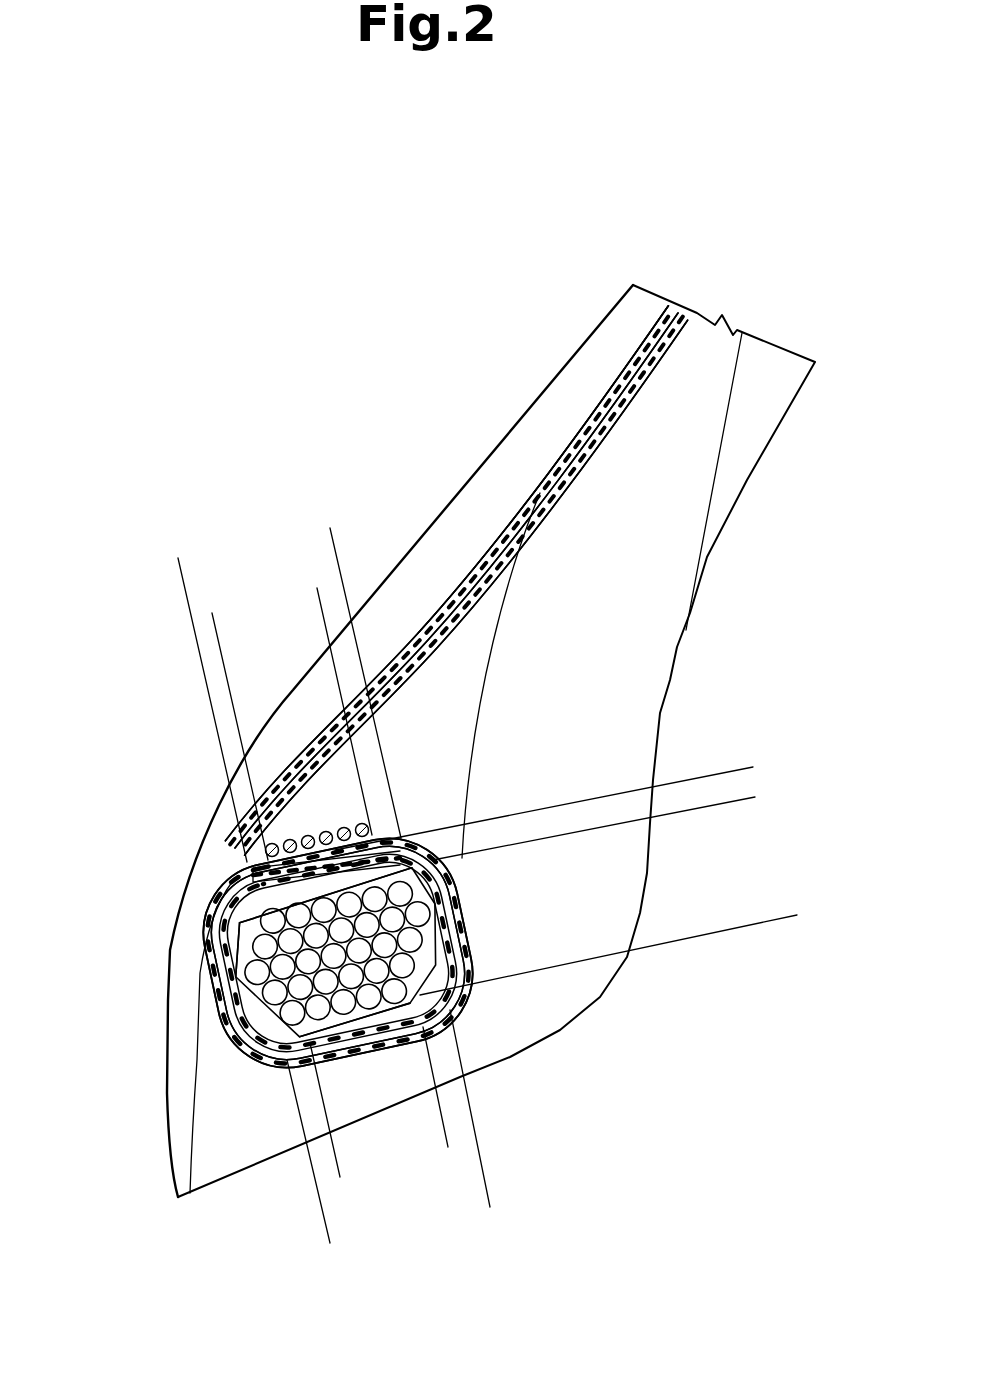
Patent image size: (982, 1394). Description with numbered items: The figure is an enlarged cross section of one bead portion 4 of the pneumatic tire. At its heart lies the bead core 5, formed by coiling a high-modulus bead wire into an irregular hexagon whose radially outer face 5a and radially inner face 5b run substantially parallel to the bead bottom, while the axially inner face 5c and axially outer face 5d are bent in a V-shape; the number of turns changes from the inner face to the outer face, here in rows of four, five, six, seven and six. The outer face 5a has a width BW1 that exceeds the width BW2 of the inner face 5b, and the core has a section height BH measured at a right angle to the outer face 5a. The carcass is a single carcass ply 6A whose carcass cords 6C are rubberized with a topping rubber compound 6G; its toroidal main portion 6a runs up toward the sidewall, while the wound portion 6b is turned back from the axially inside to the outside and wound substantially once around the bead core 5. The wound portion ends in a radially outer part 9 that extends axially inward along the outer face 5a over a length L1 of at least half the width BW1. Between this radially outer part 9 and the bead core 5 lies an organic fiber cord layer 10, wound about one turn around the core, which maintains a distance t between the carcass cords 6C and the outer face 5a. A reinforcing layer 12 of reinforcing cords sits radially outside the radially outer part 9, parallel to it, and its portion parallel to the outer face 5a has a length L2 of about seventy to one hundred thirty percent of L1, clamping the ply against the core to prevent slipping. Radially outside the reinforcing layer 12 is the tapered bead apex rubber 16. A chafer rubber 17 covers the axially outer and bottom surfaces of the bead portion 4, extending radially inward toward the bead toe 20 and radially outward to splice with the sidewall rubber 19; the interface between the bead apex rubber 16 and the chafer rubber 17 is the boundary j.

The bead portion 4 is at (717, 648).
The bead core 5 is at (287, 940).
The radially outer face 5a is at (250, 885).
The radially inner face 5b is at (347, 1015).
The axially inner face 5c is at (262, 955).
The axially outer face 5d is at (440, 905).
The carcass ply 6A is at (437, 250).
The topping rubber compound 6G is at (605, 405).
The carcass cords 6C is at (640, 377).
The toroidal main portion 6a is at (490, 528).
The wound portion 6b is at (482, 950).
The radially outer part 9 is at (380, 830).
The organic fiber cord layer 10 is at (237, 870).
The reinforcing layer 12 is at (303, 826).
The bead apex rubber 16 is at (493, 620).
The chafer rubber 17 is at (658, 548).
The sidewall rubber 19 is at (760, 420).
The bead toe 20 is at (173, 1207).
The boundary j is at (483, 660).
The length of radially outer part L1 is at (330, 530).
The length of reinforcing layer portion L2 is at (317, 595).
The width of radially outer face BW1 is at (490, 1203).
The width of radially inner face BW2 is at (448, 1142).
The section height of bead core BH is at (793, 925).
The distance t is at (747, 748).